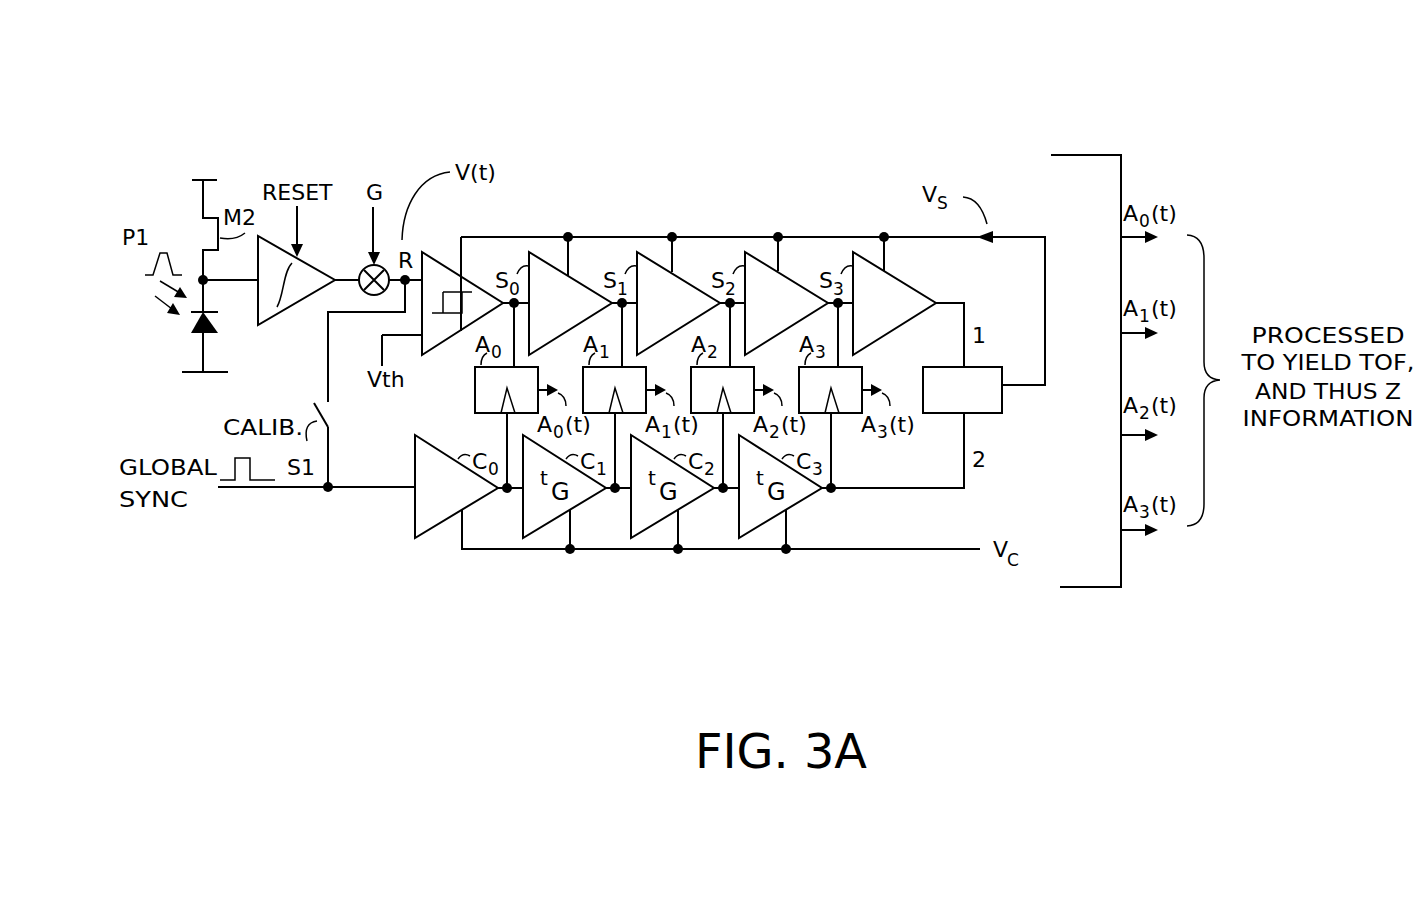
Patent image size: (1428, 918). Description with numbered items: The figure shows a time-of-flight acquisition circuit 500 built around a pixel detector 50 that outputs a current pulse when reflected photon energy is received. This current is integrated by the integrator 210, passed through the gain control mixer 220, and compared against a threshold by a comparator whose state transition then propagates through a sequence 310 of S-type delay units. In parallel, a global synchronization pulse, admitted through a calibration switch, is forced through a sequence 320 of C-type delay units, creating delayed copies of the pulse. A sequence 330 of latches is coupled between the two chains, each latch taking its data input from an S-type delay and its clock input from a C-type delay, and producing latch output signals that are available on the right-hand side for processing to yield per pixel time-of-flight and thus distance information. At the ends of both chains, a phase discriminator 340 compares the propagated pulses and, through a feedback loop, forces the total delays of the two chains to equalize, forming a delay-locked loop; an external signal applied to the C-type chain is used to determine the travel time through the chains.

The pixel detector 50 is at (182, 330).
The integrator 210 is at (287, 318).
The gain control mixer 220 is at (361, 271).
The sequence of S type delays 310 is at (940, 280).
The sequence of C-type delays 320 is at (374, 534).
The sequence of latches 330 is at (456, 391).
The phase discriminator (PFD) 340 is at (996, 418).
The circuit 500 is at (735, 183).